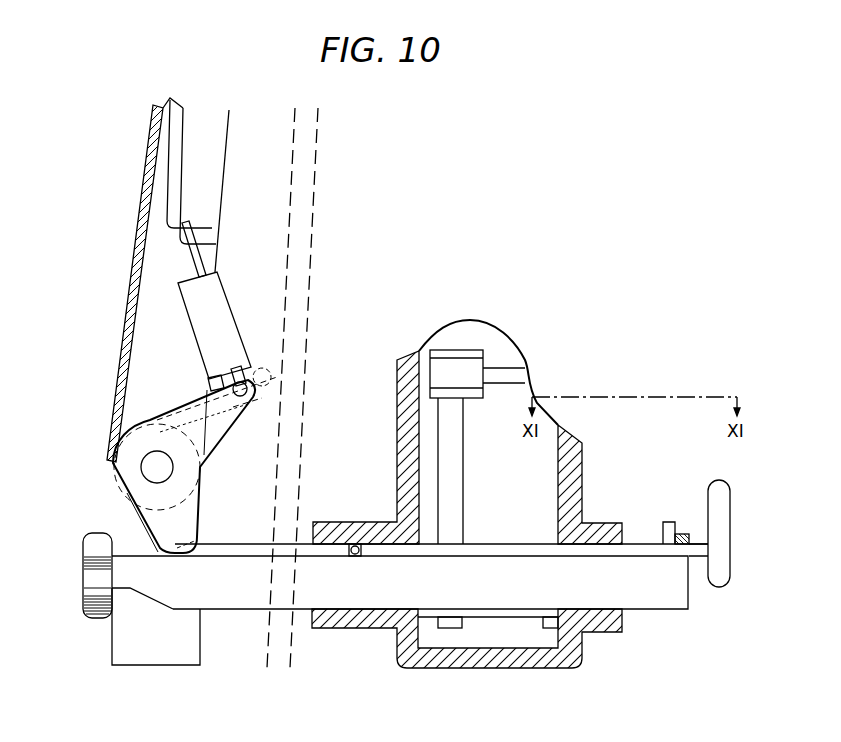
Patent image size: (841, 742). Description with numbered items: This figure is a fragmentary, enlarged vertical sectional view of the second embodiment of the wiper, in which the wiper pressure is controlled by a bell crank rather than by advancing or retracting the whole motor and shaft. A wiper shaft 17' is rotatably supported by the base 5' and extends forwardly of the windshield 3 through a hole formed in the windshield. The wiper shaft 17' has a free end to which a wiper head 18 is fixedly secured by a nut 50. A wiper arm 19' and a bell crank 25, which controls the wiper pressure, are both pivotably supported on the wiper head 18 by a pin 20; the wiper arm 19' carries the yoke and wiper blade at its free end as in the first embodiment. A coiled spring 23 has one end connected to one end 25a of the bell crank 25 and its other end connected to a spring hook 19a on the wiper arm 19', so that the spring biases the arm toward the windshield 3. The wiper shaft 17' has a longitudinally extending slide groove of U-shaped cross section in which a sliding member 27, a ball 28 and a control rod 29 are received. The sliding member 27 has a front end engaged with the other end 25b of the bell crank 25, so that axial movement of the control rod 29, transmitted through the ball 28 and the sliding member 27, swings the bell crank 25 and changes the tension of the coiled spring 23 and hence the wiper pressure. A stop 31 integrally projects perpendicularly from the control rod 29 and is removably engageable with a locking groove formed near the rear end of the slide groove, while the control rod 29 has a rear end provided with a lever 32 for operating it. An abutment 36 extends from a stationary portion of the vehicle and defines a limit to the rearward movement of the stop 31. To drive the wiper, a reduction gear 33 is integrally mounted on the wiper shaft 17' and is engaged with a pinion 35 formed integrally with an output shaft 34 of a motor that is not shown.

The windshield 3 is at (320, 212).
The base 5' is at (467, 509).
The wiper shaft 17' is at (182, 620).
The wiper head 18 is at (155, 668).
The wiper arm 19' is at (118, 283).
The spring hook 19a is at (204, 224).
The pin 20 is at (146, 458).
The coiled spring 23 is at (222, 302).
The bell crank 25 is at (214, 448).
The one end of the bell crank 25a is at (260, 396).
The other end of the bell crank 25b is at (178, 540).
The sliding member 27 is at (293, 544).
The ball 28 is at (356, 543).
The control rod 29 is at (490, 555).
The stop 31 is at (665, 522).
The lever 32 is at (719, 488).
The reduction gear 33 is at (455, 452).
The output shaft 34 is at (508, 372).
The pinion 35 is at (460, 366).
The abutment 36 is at (683, 533).
The nut 50 is at (90, 580).